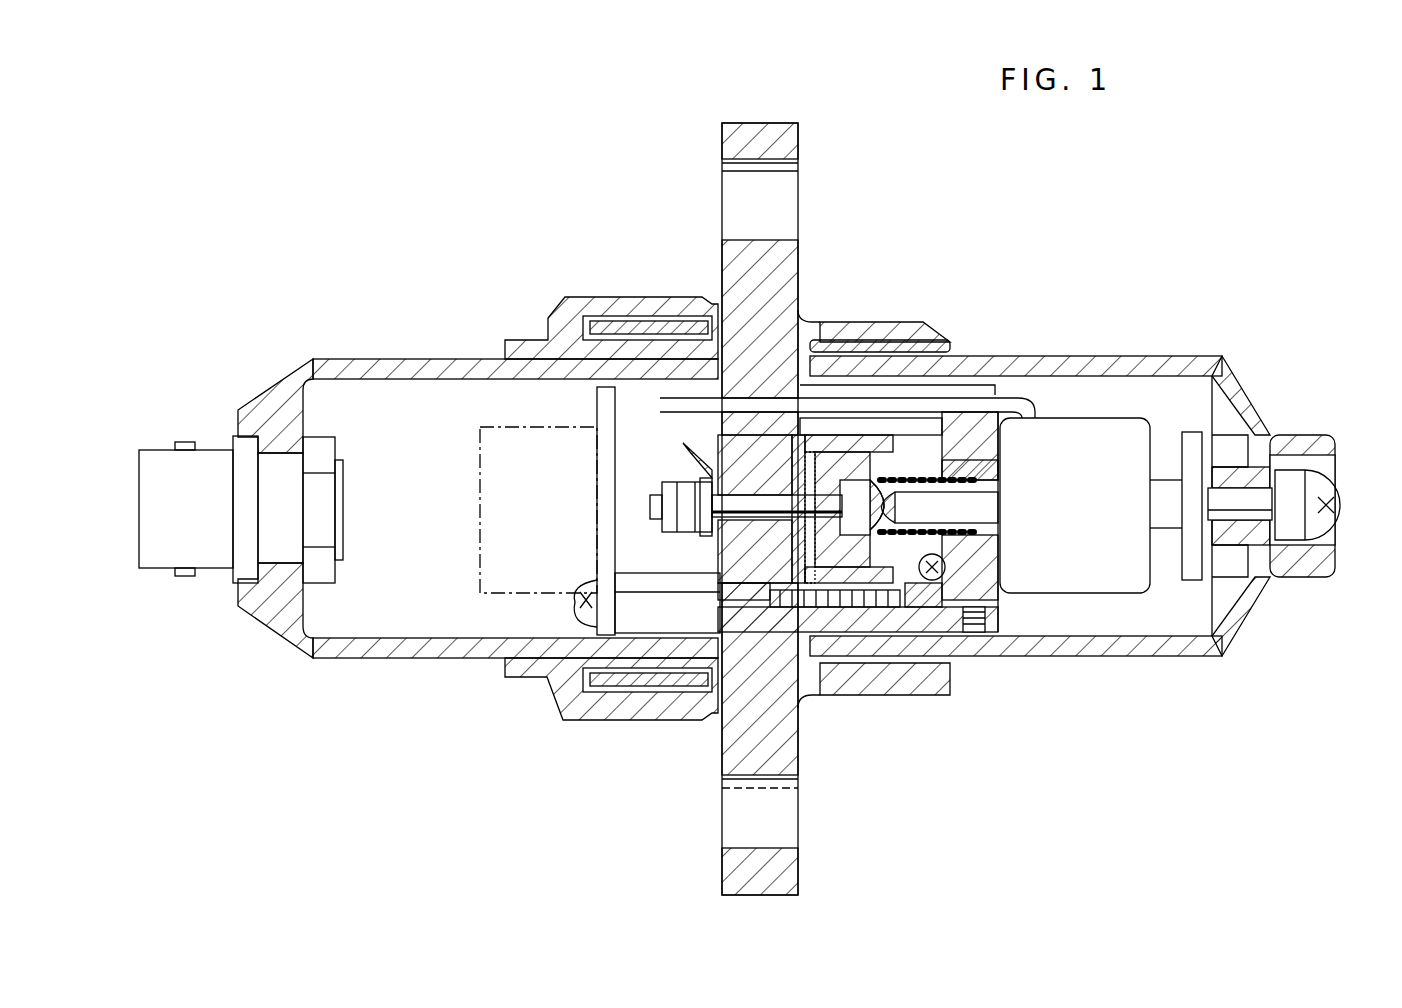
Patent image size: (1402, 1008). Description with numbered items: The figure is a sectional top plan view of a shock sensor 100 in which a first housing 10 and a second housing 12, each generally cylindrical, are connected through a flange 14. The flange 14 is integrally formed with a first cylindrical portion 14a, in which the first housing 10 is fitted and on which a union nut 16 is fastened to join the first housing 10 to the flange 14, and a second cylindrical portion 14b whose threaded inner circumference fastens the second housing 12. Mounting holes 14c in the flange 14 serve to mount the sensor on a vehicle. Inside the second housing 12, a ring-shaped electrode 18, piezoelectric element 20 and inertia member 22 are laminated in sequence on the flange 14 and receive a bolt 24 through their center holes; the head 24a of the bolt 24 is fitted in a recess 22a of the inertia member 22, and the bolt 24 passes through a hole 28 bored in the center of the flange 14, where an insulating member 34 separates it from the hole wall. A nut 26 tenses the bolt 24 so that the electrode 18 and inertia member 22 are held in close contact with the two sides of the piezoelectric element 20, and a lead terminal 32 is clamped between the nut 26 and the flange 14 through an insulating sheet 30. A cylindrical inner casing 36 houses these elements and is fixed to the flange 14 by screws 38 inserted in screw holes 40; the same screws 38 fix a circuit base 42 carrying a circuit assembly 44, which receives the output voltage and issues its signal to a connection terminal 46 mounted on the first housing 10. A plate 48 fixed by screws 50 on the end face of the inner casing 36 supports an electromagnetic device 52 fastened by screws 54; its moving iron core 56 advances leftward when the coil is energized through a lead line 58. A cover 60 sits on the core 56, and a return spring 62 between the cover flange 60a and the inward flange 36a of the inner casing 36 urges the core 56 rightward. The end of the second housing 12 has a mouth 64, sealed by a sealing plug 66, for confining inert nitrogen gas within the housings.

The shock sensor 100 is at (588, 257).
The first housing 10 is at (388, 358).
The second housing 12 is at (1065, 356).
The flange 14 is at (798, 250).
The first cylindrical portion 14a is at (652, 336).
The second cylindrical portion 14b is at (838, 440).
The mounting holes 14c is at (798, 168).
The union nut 16 is at (565, 722).
The electrode 18 is at (718, 710).
The piezoelectric element 20 is at (840, 445).
The inertia member 22 is at (868, 640).
The recess 22a is at (880, 455).
The bolt 24 is at (662, 500).
The head 24a is at (920, 690).
The nut 26 is at (680, 530).
The hole 28 is at (714, 540).
The insulating sheet 30 is at (695, 440).
The lead terminal 32 is at (690, 445).
The insulating member 34 is at (797, 325).
The inner casing 36 is at (990, 640).
The inward flange 36a is at (945, 562).
The screws 38 is at (572, 620).
The screw holes 40 is at (724, 790).
The circuit base 42 is at (597, 420).
The circuit assembly 44 is at (480, 480).
The connection terminal 46 is at (157, 573).
The plate 48 is at (1000, 620).
The screws 50 is at (975, 640).
The electromagnetic device 52 is at (1140, 418).
The screws 54 is at (1000, 528).
The moving iron core 56 is at (1000, 492).
The lead line 58 is at (1035, 400).
The cover 60 is at (1000, 462).
The flange 60a is at (1000, 512).
The return spring 62 is at (1000, 445).
The mouth 64 is at (1245, 540).
The sealing plug 66 is at (1295, 470).